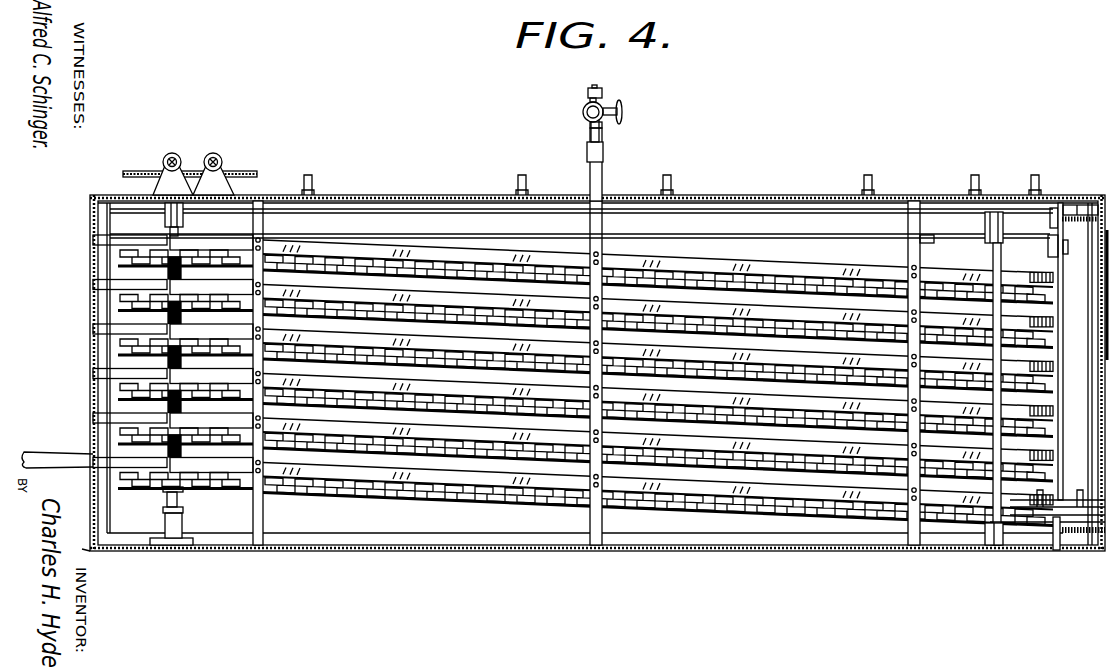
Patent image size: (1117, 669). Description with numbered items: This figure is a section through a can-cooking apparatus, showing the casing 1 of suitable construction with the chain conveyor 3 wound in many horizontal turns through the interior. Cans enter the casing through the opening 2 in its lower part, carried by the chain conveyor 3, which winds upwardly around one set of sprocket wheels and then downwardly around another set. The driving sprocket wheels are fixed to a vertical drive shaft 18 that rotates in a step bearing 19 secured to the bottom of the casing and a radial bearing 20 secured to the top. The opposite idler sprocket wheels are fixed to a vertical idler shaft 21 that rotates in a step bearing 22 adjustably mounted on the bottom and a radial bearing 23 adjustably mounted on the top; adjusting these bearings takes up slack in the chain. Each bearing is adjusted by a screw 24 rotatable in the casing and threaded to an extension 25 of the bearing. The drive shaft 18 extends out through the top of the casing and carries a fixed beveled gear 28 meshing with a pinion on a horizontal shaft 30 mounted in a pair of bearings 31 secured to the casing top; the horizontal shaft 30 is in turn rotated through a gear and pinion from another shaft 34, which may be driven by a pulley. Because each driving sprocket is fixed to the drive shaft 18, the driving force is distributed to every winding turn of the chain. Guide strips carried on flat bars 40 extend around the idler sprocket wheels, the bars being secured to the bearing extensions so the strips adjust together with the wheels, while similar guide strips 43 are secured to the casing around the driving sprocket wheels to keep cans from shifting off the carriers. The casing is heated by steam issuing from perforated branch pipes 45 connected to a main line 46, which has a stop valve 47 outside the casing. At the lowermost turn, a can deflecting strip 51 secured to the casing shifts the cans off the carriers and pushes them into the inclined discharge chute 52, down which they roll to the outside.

The casing 1 is at (525, 560).
The opening 2 is at (1095, 508).
The chain conveyor 3 is at (762, 508).
The vertical drive shaft 18 is at (168, 272).
The step bearing 19 is at (172, 528).
The radial bearing 20 is at (166, 206).
The vertical idler shaft 21 is at (996, 258).
The step bearing 22 is at (998, 530).
The radial bearing 23 is at (1002, 215).
The screw 24 is at (1073, 202).
The extension 25 is at (1052, 538).
The beveled gear 28 is at (140, 170).
The horizontal shaft 30 is at (176, 155).
The bearings 31 is at (176, 182).
The shaft 34 is at (220, 158).
The flat bars 40 is at (1062, 332).
The guide strips 43 is at (108, 330).
The perforated branch pipes 45 is at (395, 255).
The main line 46 is at (600, 178).
The stop valve 47 is at (583, 112).
The can deflecting strip 51 is at (128, 452).
The inclined discharge chute 52 is at (46, 443).